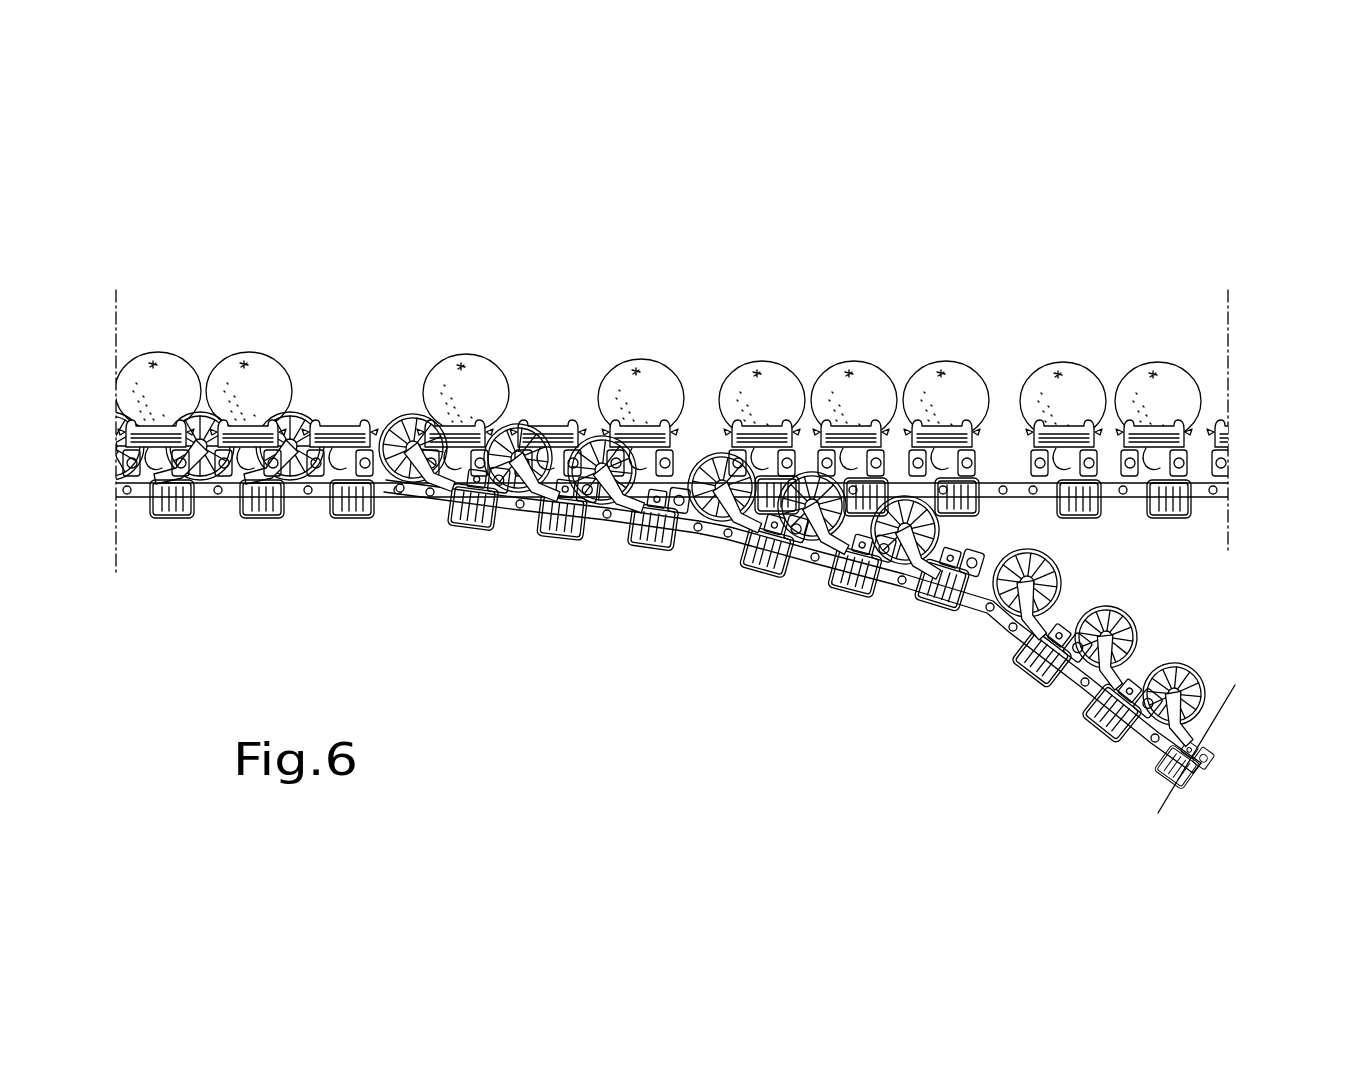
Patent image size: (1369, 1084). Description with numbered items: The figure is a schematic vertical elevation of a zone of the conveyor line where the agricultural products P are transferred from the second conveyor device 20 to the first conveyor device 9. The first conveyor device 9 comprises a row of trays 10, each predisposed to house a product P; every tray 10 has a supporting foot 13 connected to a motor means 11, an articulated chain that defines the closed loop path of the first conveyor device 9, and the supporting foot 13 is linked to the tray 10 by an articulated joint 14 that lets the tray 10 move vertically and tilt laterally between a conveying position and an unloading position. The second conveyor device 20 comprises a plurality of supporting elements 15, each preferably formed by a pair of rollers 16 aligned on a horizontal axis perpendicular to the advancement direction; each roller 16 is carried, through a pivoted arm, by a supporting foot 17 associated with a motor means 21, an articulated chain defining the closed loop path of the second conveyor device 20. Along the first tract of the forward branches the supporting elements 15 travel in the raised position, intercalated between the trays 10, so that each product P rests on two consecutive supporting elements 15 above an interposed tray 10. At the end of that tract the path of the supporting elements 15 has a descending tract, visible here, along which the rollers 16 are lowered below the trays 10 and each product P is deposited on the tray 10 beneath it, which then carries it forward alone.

The agricultural product P is at (158, 370).
The first conveyor device 9 is at (667, 318).
The tray 10 is at (763, 430).
The motor means 11 is at (927, 487).
The supporting foot 13 is at (980, 483).
The articulated joint 14 is at (1156, 652).
The supporting element 15 is at (1226, 702).
The roller 16 is at (1130, 622).
The supporting foot 17 is at (1093, 713).
The second conveyor device 20 is at (887, 618).
The motor means 21 is at (1010, 650).